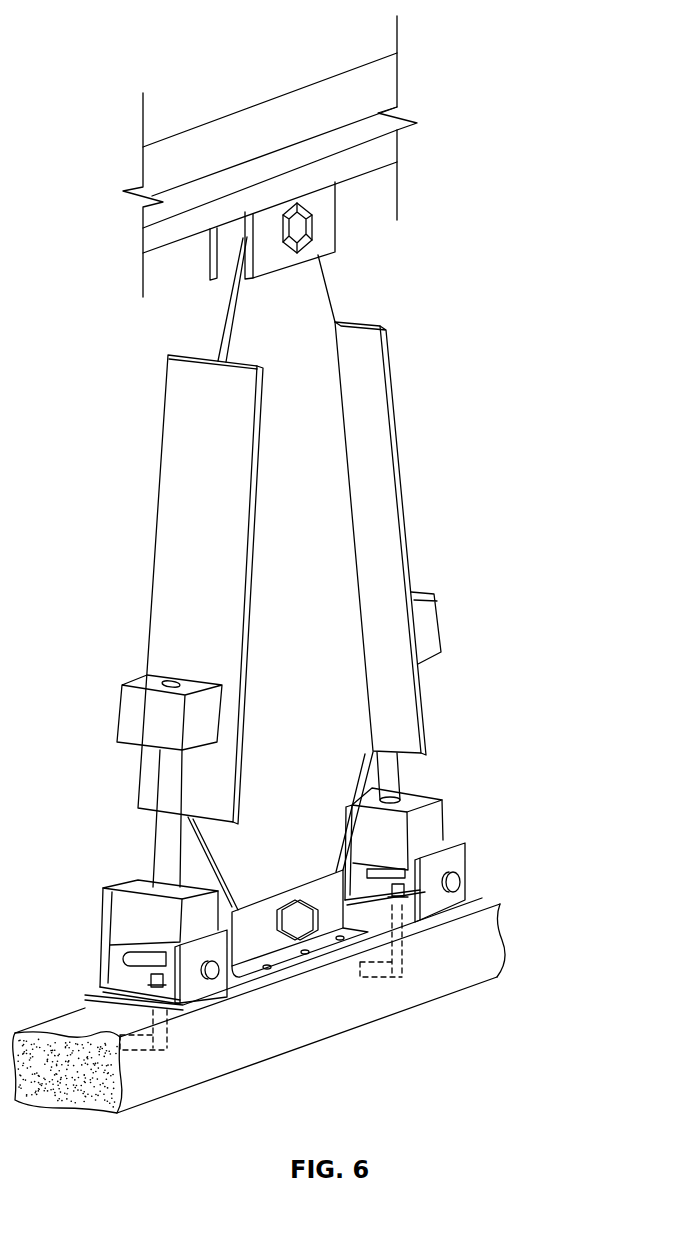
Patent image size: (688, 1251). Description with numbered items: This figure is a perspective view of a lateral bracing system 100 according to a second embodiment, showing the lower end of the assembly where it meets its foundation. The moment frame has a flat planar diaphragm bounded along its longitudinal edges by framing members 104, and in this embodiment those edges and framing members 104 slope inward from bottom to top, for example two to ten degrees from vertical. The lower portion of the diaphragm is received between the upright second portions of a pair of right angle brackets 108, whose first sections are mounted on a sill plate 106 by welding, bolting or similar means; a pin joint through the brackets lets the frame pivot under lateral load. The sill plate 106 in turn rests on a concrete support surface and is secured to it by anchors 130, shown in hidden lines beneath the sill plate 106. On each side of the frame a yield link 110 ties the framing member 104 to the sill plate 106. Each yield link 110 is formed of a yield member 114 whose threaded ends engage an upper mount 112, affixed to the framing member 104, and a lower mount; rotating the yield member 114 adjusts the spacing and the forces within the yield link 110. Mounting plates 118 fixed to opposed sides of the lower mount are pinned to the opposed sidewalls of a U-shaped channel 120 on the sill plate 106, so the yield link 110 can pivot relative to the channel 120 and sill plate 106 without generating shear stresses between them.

The lateral bracing system 100 is at (130, 50).
The framing members 104 is at (400, 458).
The sill plate 106 is at (448, 920).
The right angle brackets 108 is at (243, 948).
The yield links 110 is at (281, 842).
The upper mount 112 is at (430, 622).
The yield member 114 is at (400, 778).
The mounting plates 118 is at (447, 820).
The U-shaped channel 120 is at (455, 863).
The anchors 130 is at (403, 960).